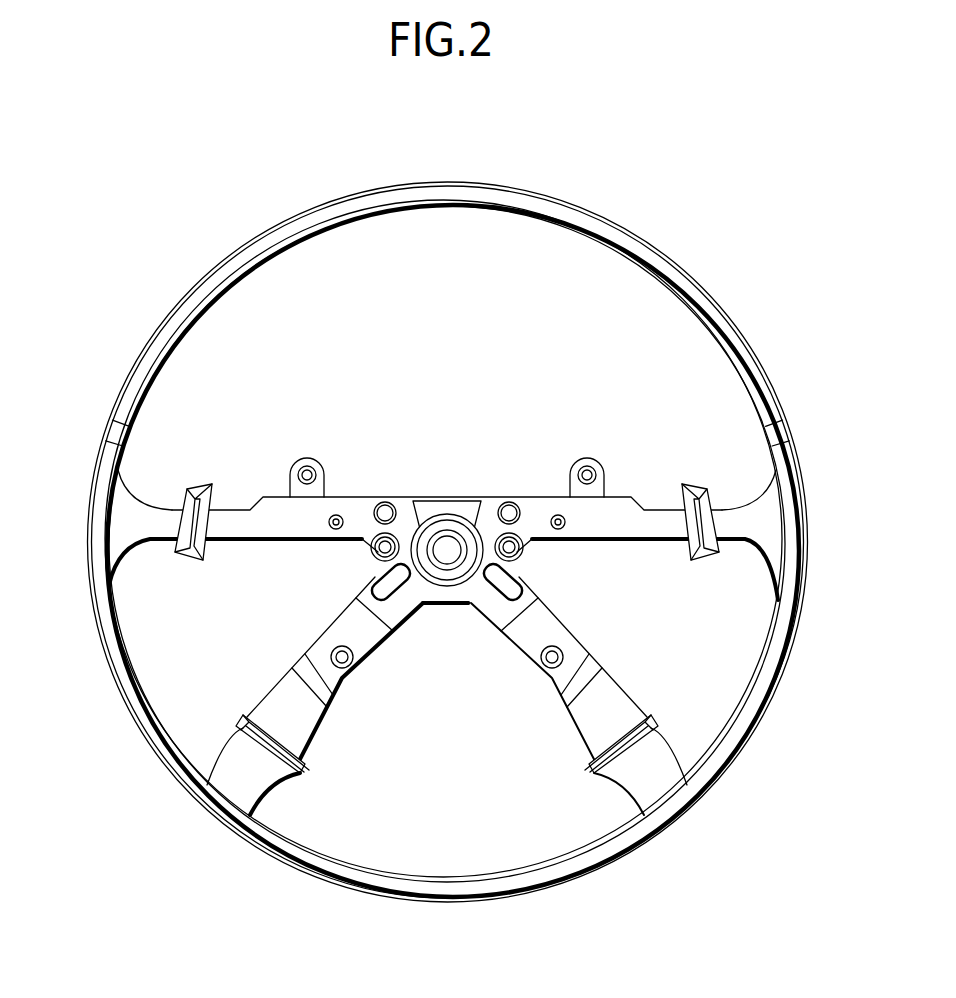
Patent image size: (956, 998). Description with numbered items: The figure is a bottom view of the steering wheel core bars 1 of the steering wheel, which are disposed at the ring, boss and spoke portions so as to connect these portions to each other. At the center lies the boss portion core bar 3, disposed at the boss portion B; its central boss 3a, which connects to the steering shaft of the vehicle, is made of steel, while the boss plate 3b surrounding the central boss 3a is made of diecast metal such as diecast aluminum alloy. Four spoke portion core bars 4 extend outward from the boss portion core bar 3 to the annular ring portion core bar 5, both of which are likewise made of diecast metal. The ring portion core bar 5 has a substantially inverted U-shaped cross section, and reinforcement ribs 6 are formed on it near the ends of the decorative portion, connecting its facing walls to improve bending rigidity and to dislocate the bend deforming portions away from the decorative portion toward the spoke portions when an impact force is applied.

The steering wheel core bars 1 is at (467, 682).
The boss portion core bar 3 is at (451, 616).
The central boss 3a is at (437, 573).
The boss plate 3b is at (460, 598).
The spoke portion core bars 4 is at (275, 522).
The ring portion core bar 5 is at (452, 191).
The reinforcement ribs 6 is at (112, 436).
The boss portion B is at (457, 480).